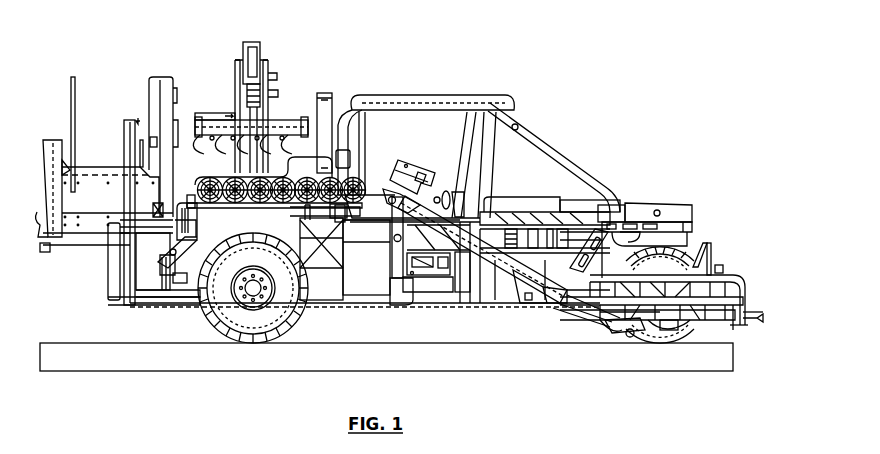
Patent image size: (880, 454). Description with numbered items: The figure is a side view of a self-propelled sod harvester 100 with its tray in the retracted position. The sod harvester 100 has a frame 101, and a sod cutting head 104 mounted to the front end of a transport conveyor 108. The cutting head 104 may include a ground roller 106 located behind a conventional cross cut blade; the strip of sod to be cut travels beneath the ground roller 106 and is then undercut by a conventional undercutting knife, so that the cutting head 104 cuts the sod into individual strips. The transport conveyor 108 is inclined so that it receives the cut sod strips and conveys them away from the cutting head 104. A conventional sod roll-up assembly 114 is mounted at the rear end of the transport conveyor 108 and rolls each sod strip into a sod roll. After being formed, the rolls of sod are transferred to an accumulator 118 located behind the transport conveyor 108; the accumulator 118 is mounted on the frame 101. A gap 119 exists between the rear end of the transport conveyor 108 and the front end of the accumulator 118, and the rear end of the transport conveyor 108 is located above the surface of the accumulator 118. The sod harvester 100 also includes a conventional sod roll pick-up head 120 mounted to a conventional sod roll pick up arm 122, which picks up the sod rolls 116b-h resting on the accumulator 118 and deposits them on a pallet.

The sod harvester 100 is at (606, 78).
The frame 101 is at (360, 222).
The sod cutting head 104 is at (718, 260).
The ground roller 106 is at (610, 335).
The transport conveyor 108 is at (456, 257).
The sod roll-up assembly 114 is at (425, 160).
The sod rolls 116b-h is at (292, 153).
The accumulator 118 is at (213, 228).
The gap 119 is at (367, 202).
The sod roll pick-up head 120 is at (213, 117).
The sod roll pick up arm 122 is at (263, 54).